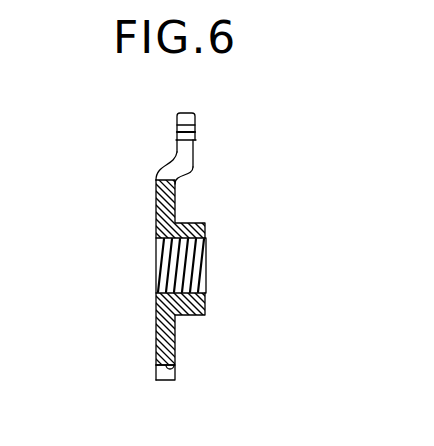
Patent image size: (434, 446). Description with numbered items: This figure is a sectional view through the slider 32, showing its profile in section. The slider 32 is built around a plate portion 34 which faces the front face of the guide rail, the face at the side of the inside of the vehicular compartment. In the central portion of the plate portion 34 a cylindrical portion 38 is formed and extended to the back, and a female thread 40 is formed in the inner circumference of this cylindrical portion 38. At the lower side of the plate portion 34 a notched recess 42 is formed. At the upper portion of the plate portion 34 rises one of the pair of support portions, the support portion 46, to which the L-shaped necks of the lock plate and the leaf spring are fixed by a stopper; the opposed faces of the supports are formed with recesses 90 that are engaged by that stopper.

The slider 32 is at (140, 190).
The plate portion 34 is at (154, 331).
The cylindrical portion 38 is at (197, 223).
The female thread 40 is at (201, 294).
The notched recess 42 is at (176, 371).
The support portion 46 is at (193, 151).
The recess 90 is at (195, 129).